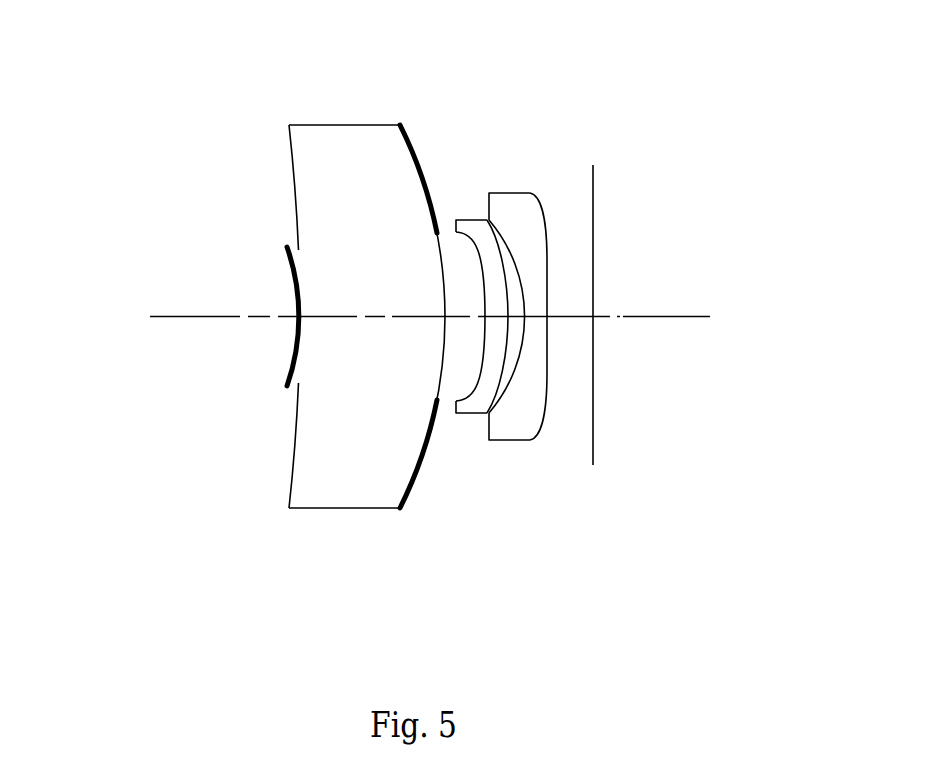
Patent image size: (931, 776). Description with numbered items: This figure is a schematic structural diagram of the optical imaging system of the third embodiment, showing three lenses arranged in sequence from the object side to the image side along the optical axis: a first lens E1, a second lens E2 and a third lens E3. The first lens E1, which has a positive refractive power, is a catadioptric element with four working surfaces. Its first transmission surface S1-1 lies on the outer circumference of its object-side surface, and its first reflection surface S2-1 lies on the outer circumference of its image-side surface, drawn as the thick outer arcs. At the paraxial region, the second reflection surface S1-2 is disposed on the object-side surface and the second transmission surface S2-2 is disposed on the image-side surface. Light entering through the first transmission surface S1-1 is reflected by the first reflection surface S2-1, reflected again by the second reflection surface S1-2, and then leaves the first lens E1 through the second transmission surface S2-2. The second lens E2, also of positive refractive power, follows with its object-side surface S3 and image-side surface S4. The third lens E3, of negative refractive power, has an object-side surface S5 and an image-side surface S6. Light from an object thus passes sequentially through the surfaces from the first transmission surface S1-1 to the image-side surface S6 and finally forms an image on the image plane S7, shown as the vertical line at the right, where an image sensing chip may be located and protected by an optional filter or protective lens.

The first lens E1 is at (352, 125).
The second lens E2 is at (472, 220).
The third lens E3 is at (509, 193).
The first transmission surface S1-1 is at (297, 445).
The second reflection surface S1-2 is at (299, 318).
The first reflection surface S2-1 is at (404, 503).
The second transmission surface S2-2 is at (444, 318).
The object-side surface of the second lens S3 is at (485, 318).
The image-side surface of the second lens S4 is at (508, 318).
The object-side surface of the third lens S5 is at (525, 318).
The image-side surface of the third lens S6 is at (547, 318).
The image plane S7 is at (593, 318).